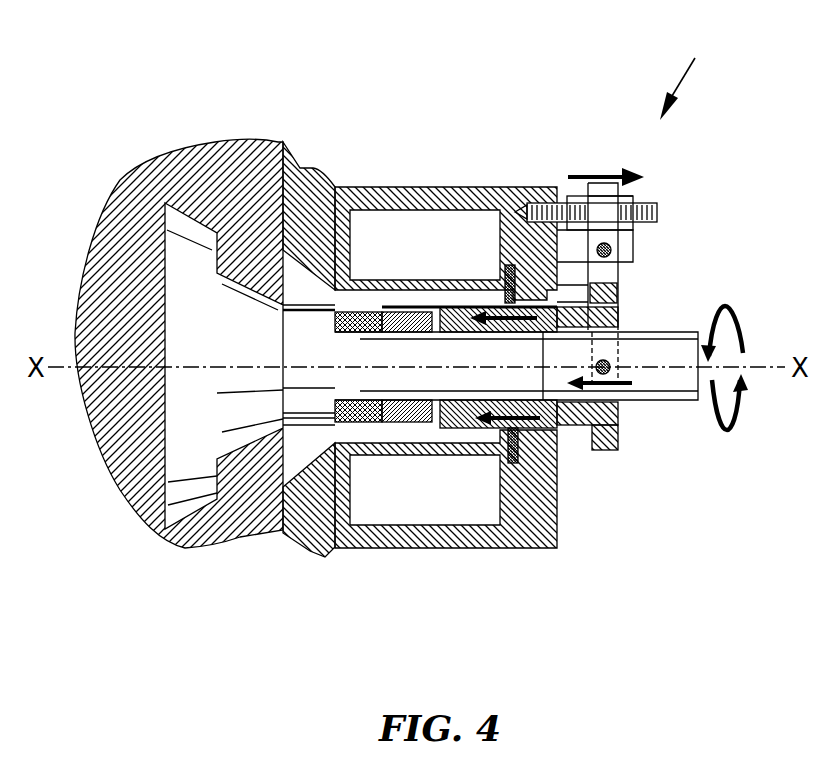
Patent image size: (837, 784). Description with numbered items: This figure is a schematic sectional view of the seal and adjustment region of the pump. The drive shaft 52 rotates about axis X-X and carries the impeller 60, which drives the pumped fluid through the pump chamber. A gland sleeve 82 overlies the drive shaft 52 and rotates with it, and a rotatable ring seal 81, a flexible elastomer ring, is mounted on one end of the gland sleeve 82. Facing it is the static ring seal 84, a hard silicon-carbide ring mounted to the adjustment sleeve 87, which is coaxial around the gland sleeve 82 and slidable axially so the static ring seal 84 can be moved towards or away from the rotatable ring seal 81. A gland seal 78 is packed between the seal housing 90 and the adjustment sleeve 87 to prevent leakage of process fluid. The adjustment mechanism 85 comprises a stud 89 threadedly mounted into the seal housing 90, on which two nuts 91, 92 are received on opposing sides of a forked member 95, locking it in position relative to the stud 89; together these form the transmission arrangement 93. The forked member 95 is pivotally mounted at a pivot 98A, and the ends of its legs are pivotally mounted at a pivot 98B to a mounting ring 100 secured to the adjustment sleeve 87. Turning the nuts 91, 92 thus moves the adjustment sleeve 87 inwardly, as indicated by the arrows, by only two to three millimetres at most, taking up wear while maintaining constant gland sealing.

The drive shaft 52 is at (668, 387).
The impeller 60 is at (200, 537).
The gland seal 78 is at (620, 275).
The rotatable ring seal 81 is at (320, 548).
The gland sleeve 82 is at (633, 393).
The static ring seal 84 is at (397, 430).
The adjustment mechanism 85 is at (690, 74).
The adjustment sleeve 87 is at (460, 428).
The stud 89 is at (640, 215).
The seal housing 90 is at (518, 187).
The nut 91 is at (613, 180).
The nut 92 is at (627, 197).
The transmission arrangement 93 is at (660, 280).
The forked member 95 is at (620, 195).
The pivot 98A is at (630, 250).
The pivot 98B is at (625, 370).
The mounting ring 100 is at (608, 453).